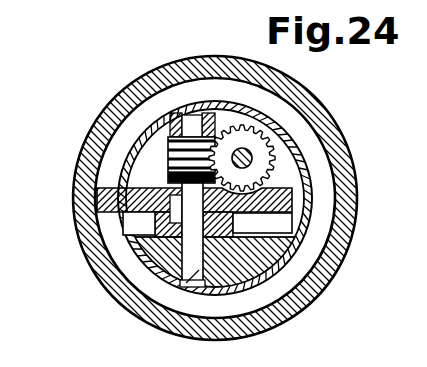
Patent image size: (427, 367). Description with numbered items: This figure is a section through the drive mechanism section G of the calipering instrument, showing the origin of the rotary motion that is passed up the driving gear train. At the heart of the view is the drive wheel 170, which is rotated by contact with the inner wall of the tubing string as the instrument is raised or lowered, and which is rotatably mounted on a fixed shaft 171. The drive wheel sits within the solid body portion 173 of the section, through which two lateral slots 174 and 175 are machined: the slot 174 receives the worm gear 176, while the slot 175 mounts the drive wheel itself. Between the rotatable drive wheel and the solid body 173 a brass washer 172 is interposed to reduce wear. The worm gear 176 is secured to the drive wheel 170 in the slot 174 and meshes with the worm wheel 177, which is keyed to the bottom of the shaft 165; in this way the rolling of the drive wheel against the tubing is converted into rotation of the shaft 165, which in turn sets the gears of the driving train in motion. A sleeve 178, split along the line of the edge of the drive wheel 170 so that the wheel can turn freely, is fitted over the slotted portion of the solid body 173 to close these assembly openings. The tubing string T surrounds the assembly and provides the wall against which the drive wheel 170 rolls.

The drive wheel 170 is at (74, 185).
The brass washer 172 is at (160, 100).
The tube T is at (87, 132).
The fixed shaft 171 is at (177, 287).
The solid body portion 173 is at (207, 101).
The drive mechanism section G is at (267, 118).
The worm gear 176 is at (133, 141).
The lateral slot 174 is at (150, 172).
The shaft 165 is at (257, 157).
The worm wheel 177 is at (259, 175).
The sleeve 178 is at (304, 201).
The lateral slot 175 is at (294, 217).